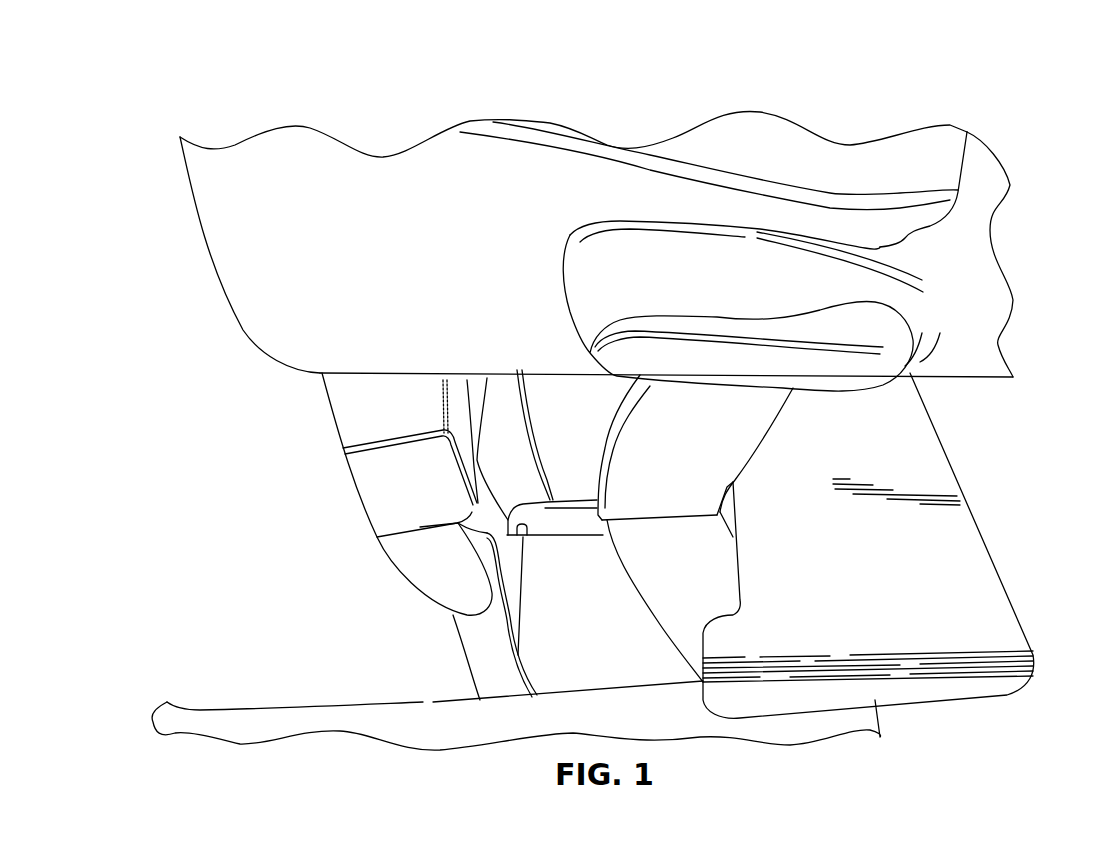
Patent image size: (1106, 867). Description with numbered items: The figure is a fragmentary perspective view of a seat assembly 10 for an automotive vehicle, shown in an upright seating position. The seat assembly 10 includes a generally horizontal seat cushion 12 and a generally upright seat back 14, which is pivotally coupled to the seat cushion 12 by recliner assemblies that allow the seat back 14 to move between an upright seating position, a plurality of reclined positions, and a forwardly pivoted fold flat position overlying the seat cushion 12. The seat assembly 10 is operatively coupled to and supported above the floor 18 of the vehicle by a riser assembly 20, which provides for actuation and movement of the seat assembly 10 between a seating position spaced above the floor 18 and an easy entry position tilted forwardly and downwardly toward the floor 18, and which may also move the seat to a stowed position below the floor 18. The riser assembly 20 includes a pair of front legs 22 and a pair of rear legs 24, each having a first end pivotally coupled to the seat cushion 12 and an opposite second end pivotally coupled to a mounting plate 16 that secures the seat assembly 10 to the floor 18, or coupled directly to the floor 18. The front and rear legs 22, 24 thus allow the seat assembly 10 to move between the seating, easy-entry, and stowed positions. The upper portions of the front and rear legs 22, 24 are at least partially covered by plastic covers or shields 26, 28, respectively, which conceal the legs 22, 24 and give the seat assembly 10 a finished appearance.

The seat assembly 10 is at (1034, 80).
The seat cushion 12 is at (219, 246).
The seat back 14 is at (990, 202).
The mounting plate 16 is at (574, 530).
The floor 18 is at (367, 722).
The riser assembly 20 is at (283, 494).
The front legs 22 is at (400, 563).
The rear legs 24 is at (730, 590).
The cover or shield 26 is at (347, 423).
The cover or shield 28 is at (748, 427).